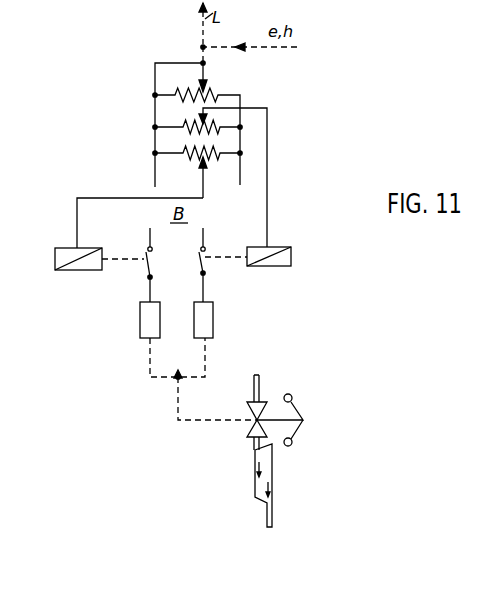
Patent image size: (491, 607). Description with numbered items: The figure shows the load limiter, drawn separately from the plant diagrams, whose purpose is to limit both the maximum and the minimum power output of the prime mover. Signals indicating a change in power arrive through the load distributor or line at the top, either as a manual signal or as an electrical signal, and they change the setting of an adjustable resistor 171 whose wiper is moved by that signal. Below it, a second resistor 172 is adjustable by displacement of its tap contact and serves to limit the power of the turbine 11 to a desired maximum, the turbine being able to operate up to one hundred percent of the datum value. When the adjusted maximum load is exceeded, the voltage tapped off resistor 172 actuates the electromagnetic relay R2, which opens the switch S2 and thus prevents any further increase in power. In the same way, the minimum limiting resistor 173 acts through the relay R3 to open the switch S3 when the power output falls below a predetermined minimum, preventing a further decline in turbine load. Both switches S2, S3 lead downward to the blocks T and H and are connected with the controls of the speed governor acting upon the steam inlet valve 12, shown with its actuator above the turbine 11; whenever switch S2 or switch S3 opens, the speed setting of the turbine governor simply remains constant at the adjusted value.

The adjustable resistor 171 is at (218, 92).
The maximum limiting resistor 172 is at (186, 122).
The minimum limiting resistor 173 is at (186, 150).
The steam inlet valve 12 is at (249, 431).
The turbine 11 is at (255, 480).
The electromagnetic relay R2 is at (291, 253).
The relay R3 is at (55, 259).
The switch S2 is at (203, 257).
The switch S3 is at (145, 254).
The temperature controller T is at (150, 320).
The humidity controller H is at (203, 320).